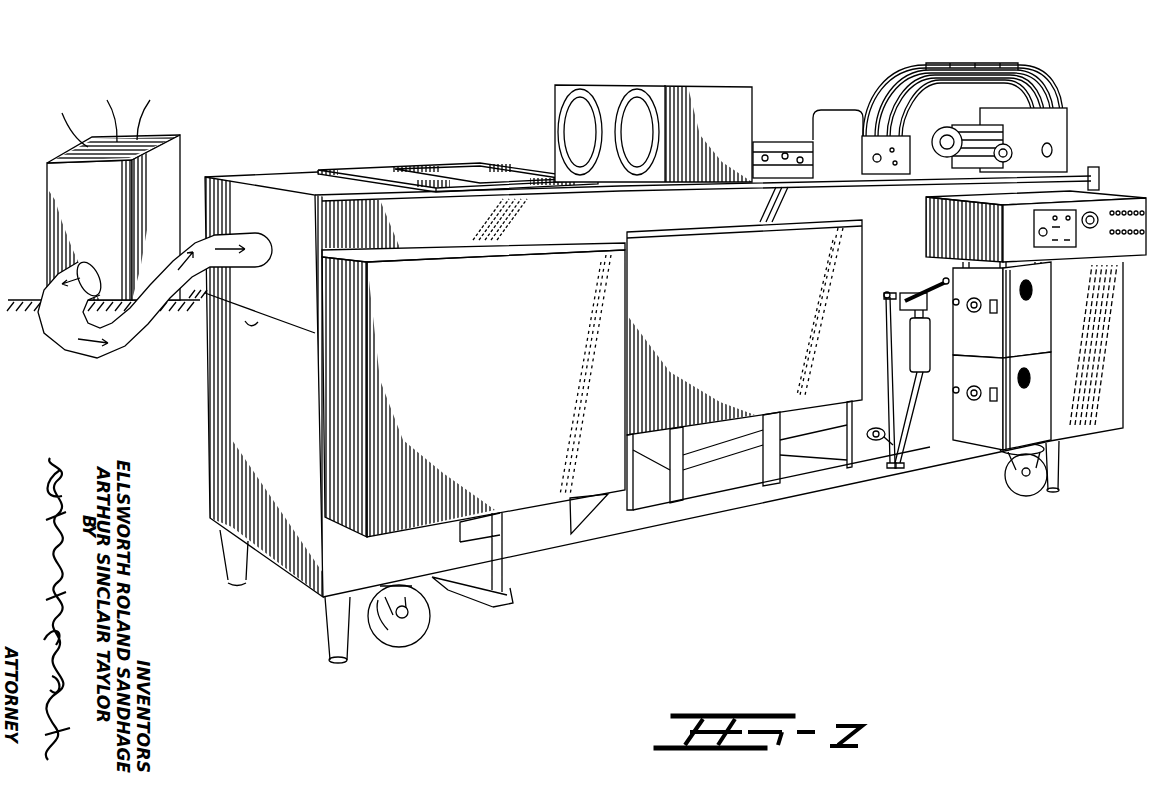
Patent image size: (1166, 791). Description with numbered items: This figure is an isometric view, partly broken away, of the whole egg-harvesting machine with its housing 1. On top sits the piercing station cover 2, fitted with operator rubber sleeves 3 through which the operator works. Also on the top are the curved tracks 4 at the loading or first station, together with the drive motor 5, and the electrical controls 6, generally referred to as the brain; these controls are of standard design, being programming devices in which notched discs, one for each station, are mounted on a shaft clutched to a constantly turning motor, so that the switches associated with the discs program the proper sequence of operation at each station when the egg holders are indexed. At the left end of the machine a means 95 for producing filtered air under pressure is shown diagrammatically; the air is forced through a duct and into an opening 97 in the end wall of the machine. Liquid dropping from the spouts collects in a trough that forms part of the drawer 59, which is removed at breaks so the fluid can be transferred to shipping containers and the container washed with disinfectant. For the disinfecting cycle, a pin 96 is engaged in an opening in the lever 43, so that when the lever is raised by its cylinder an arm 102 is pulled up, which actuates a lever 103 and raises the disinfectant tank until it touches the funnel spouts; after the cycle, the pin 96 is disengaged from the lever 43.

The housing 1 is at (215, 215).
The piercing station cover 2 is at (675, 86).
The operator rubber sleeves 3 is at (633, 120).
The curved tracks 4 is at (988, 53).
The drive motor 5 is at (972, 146).
The electrical controls 6 is at (1114, 190).
The lever 43 is at (929, 283).
The drawer 59 is at (233, 338).
The means for producing filtered air under pressure 95 is at (182, 148).
The pin 96 is at (884, 300).
The opening 97 is at (257, 234).
The arm 102 is at (888, 346).
The lever 103 is at (876, 440).